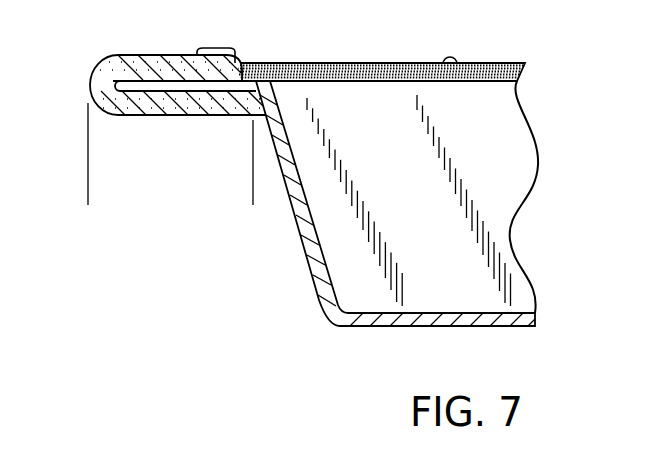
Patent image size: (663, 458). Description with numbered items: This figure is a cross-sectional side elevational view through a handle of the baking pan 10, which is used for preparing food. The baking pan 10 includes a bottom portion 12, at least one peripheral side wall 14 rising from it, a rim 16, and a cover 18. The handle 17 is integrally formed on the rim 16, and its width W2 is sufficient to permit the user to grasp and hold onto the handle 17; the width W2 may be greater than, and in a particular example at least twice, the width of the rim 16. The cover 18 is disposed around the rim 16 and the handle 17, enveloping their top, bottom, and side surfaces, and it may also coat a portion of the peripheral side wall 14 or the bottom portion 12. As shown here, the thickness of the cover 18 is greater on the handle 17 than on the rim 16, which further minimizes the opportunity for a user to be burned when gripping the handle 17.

The baking pan 10 is at (307, 208).
The bottom portion 12 is at (536, 327).
The peripheral side wall 14 is at (308, 265).
The rim 16 is at (185, 82).
The handle 17 is at (90, 80).
The cover 18 is at (203, 116).
The width of the handle W2 is at (253, 188).